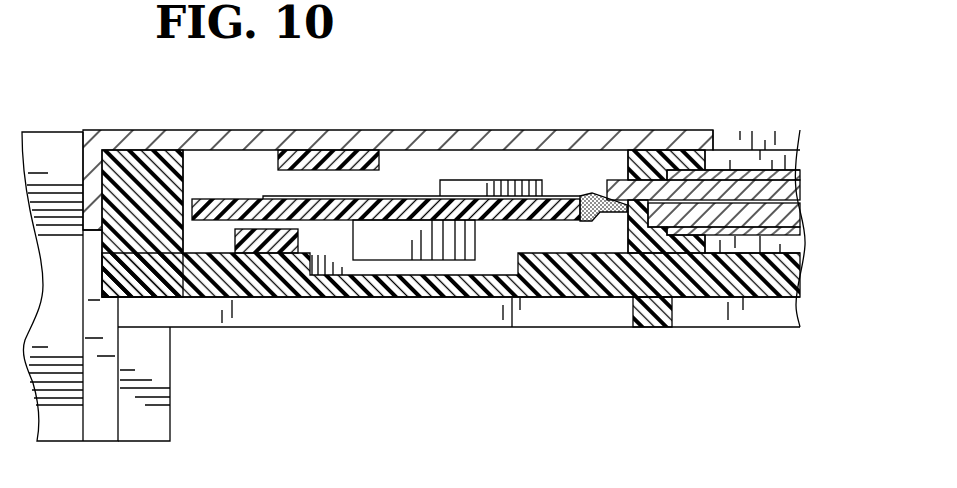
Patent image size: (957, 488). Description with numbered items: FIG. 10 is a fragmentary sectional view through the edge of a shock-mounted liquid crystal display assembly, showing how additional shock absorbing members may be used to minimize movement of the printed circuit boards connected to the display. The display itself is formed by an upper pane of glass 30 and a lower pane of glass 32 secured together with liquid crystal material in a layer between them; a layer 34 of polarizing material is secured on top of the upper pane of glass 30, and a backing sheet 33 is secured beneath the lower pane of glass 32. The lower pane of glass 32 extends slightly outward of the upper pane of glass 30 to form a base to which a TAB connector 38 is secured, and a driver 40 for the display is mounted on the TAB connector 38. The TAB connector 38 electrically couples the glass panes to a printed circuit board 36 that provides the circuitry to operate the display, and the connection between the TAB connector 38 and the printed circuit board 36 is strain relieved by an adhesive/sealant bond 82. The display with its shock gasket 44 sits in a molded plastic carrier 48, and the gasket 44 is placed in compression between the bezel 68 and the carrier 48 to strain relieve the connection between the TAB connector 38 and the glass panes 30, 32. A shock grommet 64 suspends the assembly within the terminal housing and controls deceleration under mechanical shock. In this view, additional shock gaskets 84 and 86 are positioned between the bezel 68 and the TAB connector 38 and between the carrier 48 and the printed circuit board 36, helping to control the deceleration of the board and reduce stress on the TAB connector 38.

The upper pane of glass 30 is at (787, 188).
The lower pane of glass 32 is at (790, 218).
The backing sheet 33 is at (790, 237).
The layer of polarizing material 34 is at (758, 170).
The printed circuit board 36 is at (212, 199).
The TAB connector 38 is at (410, 196).
The driver 40 is at (483, 192).
The shock gasket 44 is at (613, 170).
The carrier 48 is at (567, 283).
The shock grommet 64 is at (50, 155).
The bezel 68 is at (610, 130).
The adhesive/sealant bond 82 is at (603, 220).
The additional shock gasket 84 is at (313, 163).
The additional shock gasket 86 is at (270, 252).